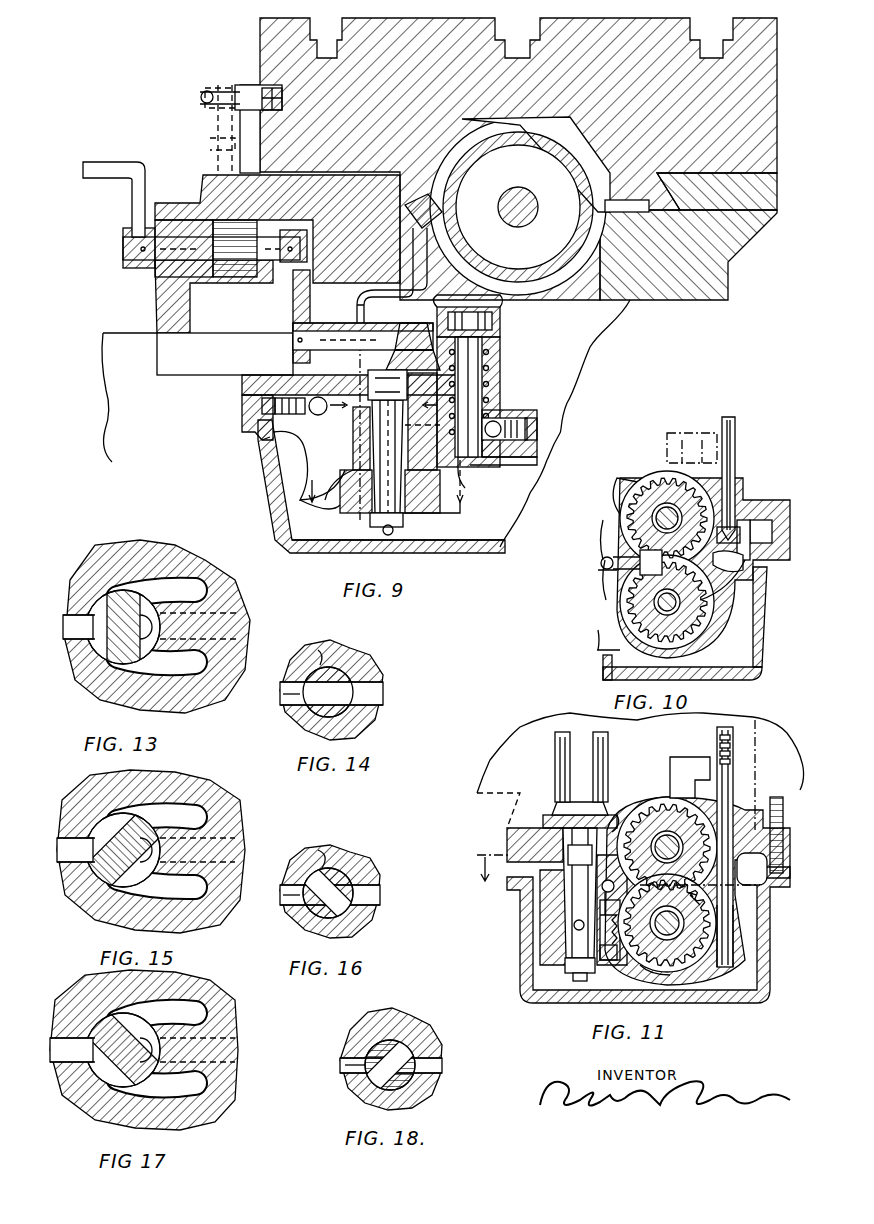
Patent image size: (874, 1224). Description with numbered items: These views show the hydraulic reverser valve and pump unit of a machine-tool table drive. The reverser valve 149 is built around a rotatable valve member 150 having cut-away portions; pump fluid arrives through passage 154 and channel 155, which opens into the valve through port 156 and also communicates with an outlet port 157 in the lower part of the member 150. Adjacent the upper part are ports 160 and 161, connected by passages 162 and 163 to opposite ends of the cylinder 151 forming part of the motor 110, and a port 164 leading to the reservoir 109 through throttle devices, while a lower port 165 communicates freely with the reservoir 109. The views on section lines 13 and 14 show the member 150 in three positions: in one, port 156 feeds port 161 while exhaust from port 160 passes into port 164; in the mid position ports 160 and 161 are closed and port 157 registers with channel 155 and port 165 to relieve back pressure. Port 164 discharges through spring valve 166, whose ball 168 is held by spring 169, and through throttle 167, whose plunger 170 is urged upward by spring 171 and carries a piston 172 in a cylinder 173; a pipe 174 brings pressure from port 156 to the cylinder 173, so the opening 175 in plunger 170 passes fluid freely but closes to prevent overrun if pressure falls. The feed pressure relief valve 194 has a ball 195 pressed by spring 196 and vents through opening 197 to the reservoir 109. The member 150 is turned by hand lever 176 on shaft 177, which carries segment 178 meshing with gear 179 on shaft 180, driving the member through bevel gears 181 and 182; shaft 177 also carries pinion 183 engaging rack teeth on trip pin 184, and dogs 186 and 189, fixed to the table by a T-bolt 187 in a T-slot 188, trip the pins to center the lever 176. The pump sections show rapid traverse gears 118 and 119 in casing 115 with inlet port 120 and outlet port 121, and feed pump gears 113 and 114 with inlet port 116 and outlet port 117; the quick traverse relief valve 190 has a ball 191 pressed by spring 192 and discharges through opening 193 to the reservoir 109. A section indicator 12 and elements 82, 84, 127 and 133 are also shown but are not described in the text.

In FIG. 9, the motor 110 is at (600, 162).
In FIG. 9, the cylinder 151 is at (580, 150).
In FIG. 9, the pipe 174 is at (390, 290).
In FIG. 9, the bevel gear 181 is at (410, 298).
In FIG. 9, the pinion 183 is at (205, 178).
In FIG. 9, the shaft 177 is at (120, 248).
In FIG. 9, the hand lever 176 is at (105, 165).
In FIG. 9, the dog 186 is at (218, 120).
In FIG. 9, the segment 178 is at (300, 240).
In FIG. 9, the plunger or trip pin 184 is at (255, 135).
In FIG. 9, the dog 189 is at (248, 85).
In FIG. 9, the T-slot 188 is at (262, 55).
In FIG. 9, the T-bolt 187 is at (200, 97).
In FIG. 9, the gear 179 is at (285, 322).
In FIG. 9, the shaft 180 is at (335, 340).
In FIG. 9, the bevel gear 182 is at (398, 350).
In FIG. 9, the opening 197 is at (262, 440).
In FIG. 9, the spring 196 is at (266, 450).
In FIG. 9, the feed pressure relief valve 194 is at (262, 407).
In FIG. 9, the ball 195 is at (309, 465).
In FIG. 9, the channel 155 is at (330, 500).
In FIG. 14, the channel 155 is at (283, 694).
In FIG. 16, the channel 155 is at (283, 895).
In FIG. 18, the channel 155 is at (345, 1065).
In FIG. 9, the section line 14 is at (387, 485).
In FIG. 9, the section line 13 is at (389, 419).
In FIG. 9, the reverser valve 149 is at (305, 528).
In FIG. 11, the reverser valve 149 is at (520, 810).
In FIG. 13, the reverser valve 149 is at (240, 690).
In FIG. 14, the reverser valve 149 is at (295, 717).
In FIG. 15, the reverser valve 149 is at (151, 851).
In FIG. 16, the reverser valve 149 is at (330, 891).
In FIG. 17, the reverser valve 149 is at (144, 1050).
In FIG. 18, the reverser valve 149 is at (391, 1059).
In FIG. 9, the reservoir 109 is at (470, 557).
In FIG. 11, the reservoir 109 is at (745, 950).
In FIG. 9, the valve or throttle 167 is at (505, 336).
In FIG. 9, the port 164 is at (450, 432).
In FIG. 13, the port 164 is at (190, 626).
In FIG. 15, the port 164 is at (232, 855).
In FIG. 17, the port 164 is at (187, 1050).
In FIG. 9, the port 165 is at (410, 518).
In FIG. 9, the rotatable valve member 150 is at (390, 456).
In FIG. 11, the rotatable valve member 150 is at (580, 893).
In FIG. 13, the rotatable valve member 150 is at (80, 600).
In FIG. 14, the rotatable valve member 150 is at (320, 650).
In FIG. 15, the rotatable valve member 150 is at (90, 825).
In FIG. 16, the rotatable valve member 150 is at (328, 848).
In FIG. 17, the rotatable valve member 150 is at (80, 1030).
In FIG. 18, the rotatable valve member 150 is at (395, 1040).
In FIG. 9, the port 156 is at (387, 385).
In FIG. 13, the port 156 is at (63, 628).
In FIG. 15, the port 156 is at (62, 850).
In FIG. 17, the port 156 is at (60, 1050).
In FIG. 9, the outlet port 157 is at (372, 518).
In FIG. 14, the outlet port 157 is at (338, 665).
In FIG. 16, the outlet port 157 is at (340, 875).
In FIG. 9, the spring 171 is at (500, 350).
In FIG. 9, the plunger 170 is at (464, 457).
In FIG. 9, the opening 175 is at (479, 484).
In FIG. 9, the piston 172 is at (468, 330).
In FIG. 9, the cylinder 173 is at (505, 310).
In FIG. 9, the ball 168 is at (505, 418).
In FIG. 9, the spring 169 is at (537, 430).
In FIG. 9, the spring valve or throttle 166 is at (500, 462).
In FIG. 10, the inlet port 120 is at (767, 600).
In FIG. 10, the gear 118 is at (655, 480).
In FIG. 10, the gear chamber 127 is at (705, 622).
In FIG. 10, the gear 119 is at (625, 605).
In FIG. 10, the control rod 133 is at (703, 480).
In FIG. 11, the control rod 133 is at (735, 800).
In FIG. 10, the passage 154 is at (601, 565).
In FIG. 10, the outlet port 121 is at (600, 545).
In FIG. 11, the outlet port 121 is at (605, 890).
In FIG. 10, the casing 115 is at (605, 640).
In FIG. 11, the casing 115 is at (668, 972).
In FIG. 14, the casing 115 is at (370, 690).
In FIG. 16, the casing 115 is at (370, 893).
In FIG. 18, the casing 115 is at (432, 1067).
In FIG. 11, the port 160 is at (550, 838).
In FIG. 13, the port 160 is at (168, 540).
In FIG. 15, the port 160 is at (185, 805).
In FIG. 17, the port 160 is at (170, 1003).
In FIG. 11, the gear 113 is at (650, 800).
In FIG. 11, the gear 114 is at (705, 965).
In FIG. 11, the passage 162 is at (555, 745).
In FIG. 11, the passage 163 is at (608, 745).
In FIG. 11, the port 161 is at (615, 825).
In FIG. 13, the port 161 is at (160, 672).
In FIG. 15, the port 161 is at (165, 895).
In FIG. 17, the port 161 is at (160, 1095).
In FIG. 11, the screw 82 is at (765, 900).
In FIG. 11, the rod 84 is at (725, 935).
In FIG. 11, the inlet port 116 is at (727, 905).
In FIG. 11, the section line 12 is at (588, 892).
In FIG. 11, the outlet port 117 is at (612, 879).
In FIG. 11, the ball 191 is at (602, 915).
In FIG. 11, the spring 192 is at (608, 960).
In FIG. 11, the quick traverse pressure relief valve 190 is at (602, 962).
In FIG. 11, the opening 193 is at (590, 990).